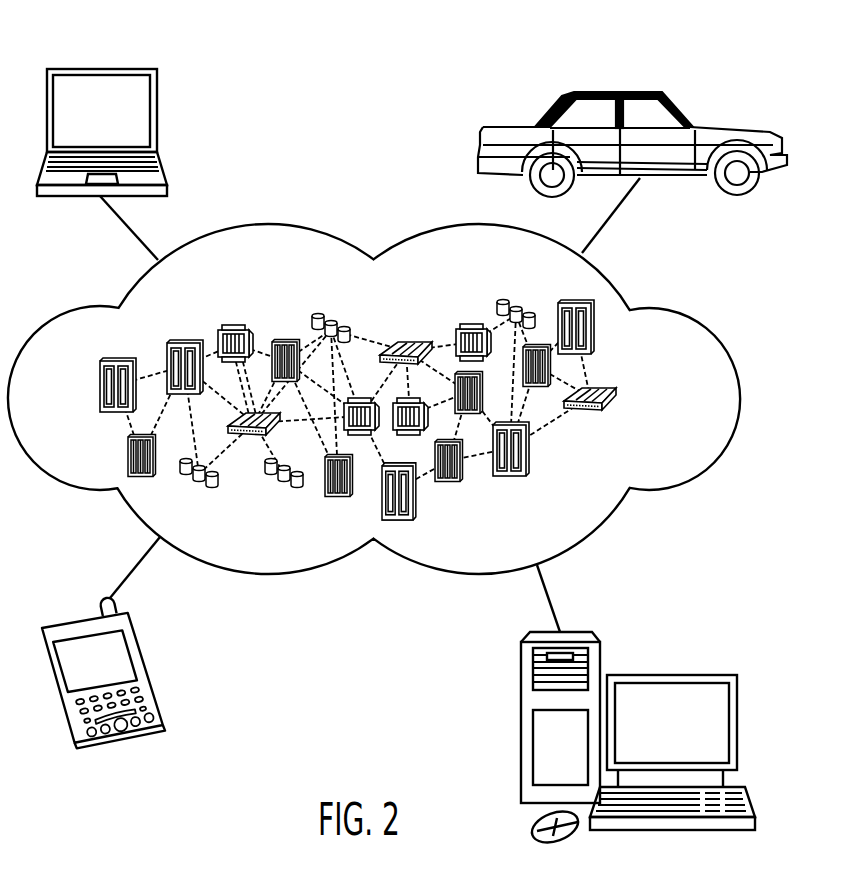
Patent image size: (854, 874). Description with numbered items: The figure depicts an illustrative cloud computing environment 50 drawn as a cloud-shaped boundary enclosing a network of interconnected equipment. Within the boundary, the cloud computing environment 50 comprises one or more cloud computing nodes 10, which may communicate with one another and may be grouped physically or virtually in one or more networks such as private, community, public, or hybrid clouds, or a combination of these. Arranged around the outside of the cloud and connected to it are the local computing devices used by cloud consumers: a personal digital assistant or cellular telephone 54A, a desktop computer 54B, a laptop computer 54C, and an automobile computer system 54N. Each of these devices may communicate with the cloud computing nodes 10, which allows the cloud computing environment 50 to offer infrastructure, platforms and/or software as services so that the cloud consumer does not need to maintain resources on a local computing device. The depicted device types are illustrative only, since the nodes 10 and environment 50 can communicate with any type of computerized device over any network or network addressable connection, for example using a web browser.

The cloud computing node 10 is at (624, 400).
The cloud computing environment 50 is at (685, 312).
The personal digital assistant or cellular telephone 54A is at (82, 617).
The desktop computer 54B is at (670, 673).
The laptop computer 54C is at (99, 69).
The automobile computer system 54N is at (613, 97).